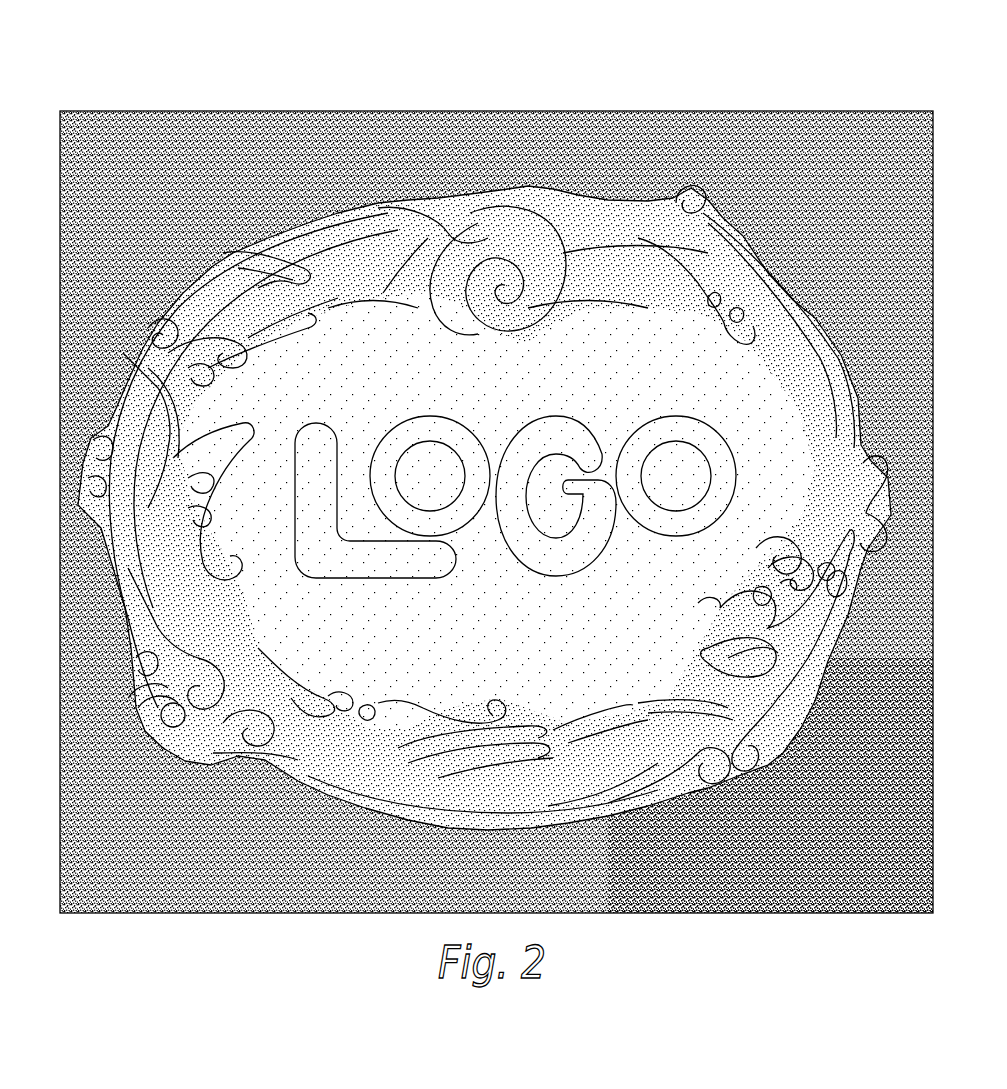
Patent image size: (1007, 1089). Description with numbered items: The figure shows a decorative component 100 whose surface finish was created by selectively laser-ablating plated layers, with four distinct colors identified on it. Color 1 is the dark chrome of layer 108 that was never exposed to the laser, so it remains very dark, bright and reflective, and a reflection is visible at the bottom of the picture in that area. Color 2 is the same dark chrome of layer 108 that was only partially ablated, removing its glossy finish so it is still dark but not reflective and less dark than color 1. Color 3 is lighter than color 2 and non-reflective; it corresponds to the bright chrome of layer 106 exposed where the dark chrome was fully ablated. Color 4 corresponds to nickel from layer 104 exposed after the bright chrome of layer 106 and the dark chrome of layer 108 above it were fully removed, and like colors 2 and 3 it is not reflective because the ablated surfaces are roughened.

The color 1 is at (765, 125).
The color 2 is at (315, 655).
The color 3 is at (780, 585).
The color 4 is at (290, 478).
The component 100 is at (855, 290).
The nickel layer 104 is at (348, 437).
The bright chrome layer 106 is at (150, 697).
The dark chrome layer 108 is at (825, 710).